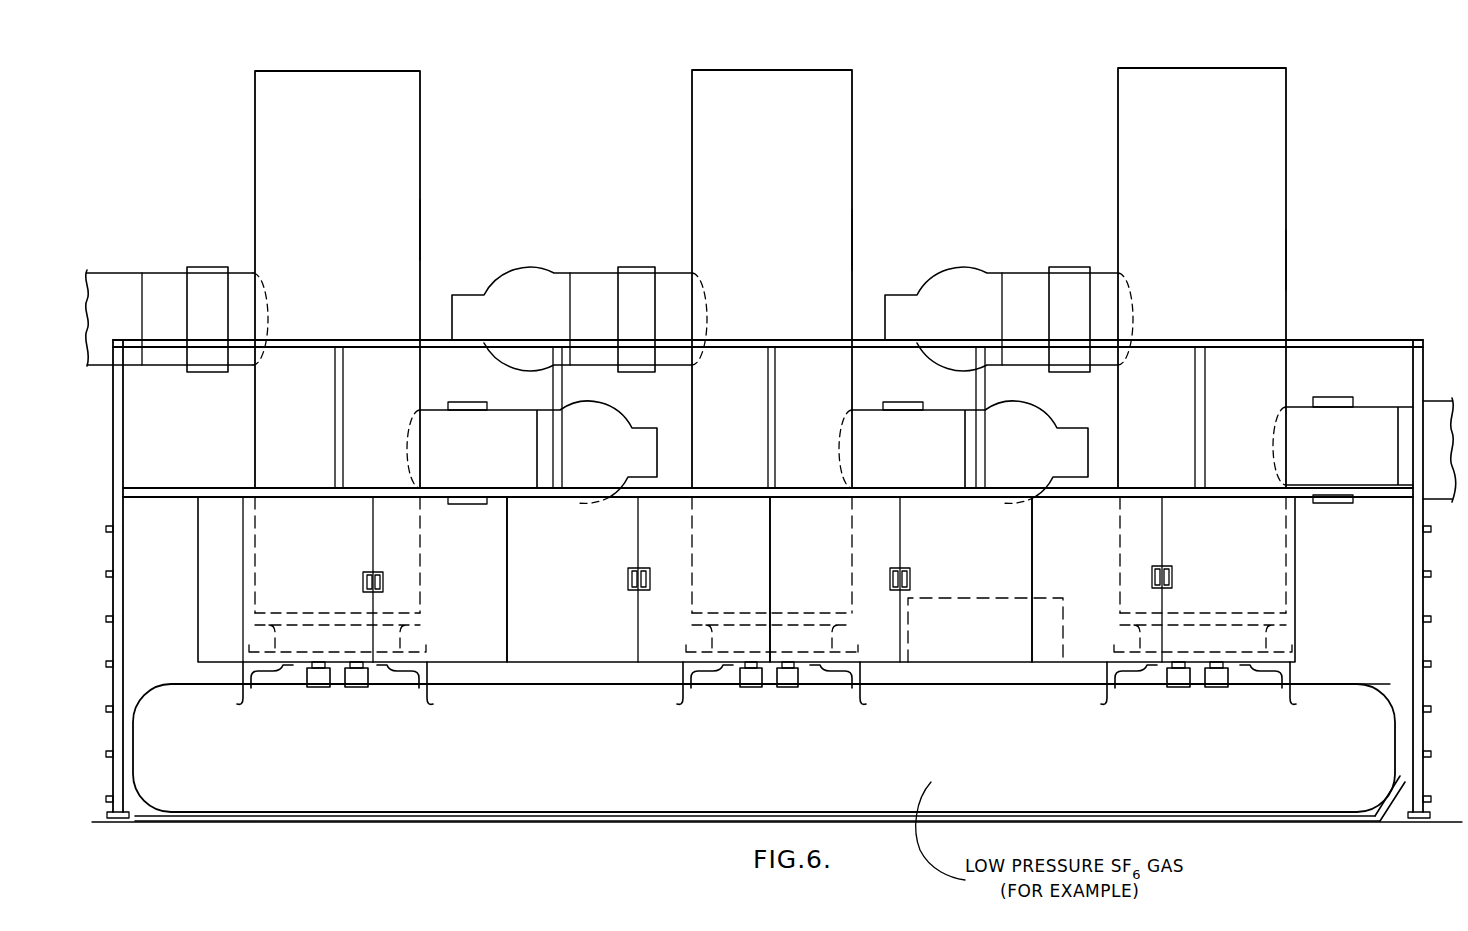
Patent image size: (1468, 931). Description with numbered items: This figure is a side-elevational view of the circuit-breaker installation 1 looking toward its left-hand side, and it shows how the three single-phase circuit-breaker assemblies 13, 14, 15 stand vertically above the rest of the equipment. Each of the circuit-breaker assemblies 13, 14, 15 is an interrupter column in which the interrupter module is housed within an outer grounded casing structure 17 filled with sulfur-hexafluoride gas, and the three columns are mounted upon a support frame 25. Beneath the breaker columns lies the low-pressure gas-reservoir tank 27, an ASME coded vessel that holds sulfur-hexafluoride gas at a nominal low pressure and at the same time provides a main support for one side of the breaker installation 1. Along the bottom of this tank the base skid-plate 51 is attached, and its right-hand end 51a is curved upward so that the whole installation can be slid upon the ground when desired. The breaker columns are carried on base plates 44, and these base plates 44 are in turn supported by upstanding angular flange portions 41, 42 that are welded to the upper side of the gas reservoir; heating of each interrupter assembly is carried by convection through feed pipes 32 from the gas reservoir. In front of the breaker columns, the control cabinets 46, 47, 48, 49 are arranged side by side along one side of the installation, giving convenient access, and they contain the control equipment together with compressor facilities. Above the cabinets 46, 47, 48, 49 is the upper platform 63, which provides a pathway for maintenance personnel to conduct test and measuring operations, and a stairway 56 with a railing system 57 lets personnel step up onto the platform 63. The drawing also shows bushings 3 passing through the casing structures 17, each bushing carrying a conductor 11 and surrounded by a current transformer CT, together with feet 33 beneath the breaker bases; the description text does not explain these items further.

The circuit-breaker installation 1 is at (920, 186).
The bushing 3 is at (160, 273).
The conductor 11 is at (142, 273).
The current transformer CT is at (208, 267).
The circuit-breaker assembly 13 is at (328, 207).
The circuit-breaker assembly 14 is at (765, 207).
The circuit-breaker assembly 15 is at (1190, 207).
The casing structure 17 is at (420, 234).
The support frame 25 is at (470, 822).
The low-pressure gas-reservoir tank 27 is at (588, 686).
The feed pipe 32 is at (362, 680).
The support foot 33 is at (312, 680).
The upstanding angular flange portion 41 is at (427, 670).
The upstanding angular flange portion 42 is at (243, 670).
The base plate 44 is at (356, 650).
The control cabinet 46 is at (296, 557).
The control cabinet 47 is at (563, 557).
The control cabinet 48 is at (948, 557).
The control cabinet 49 is at (1193, 557).
The base skid-plate 51 is at (1172, 818).
The right-hand end of skid-plate 51a is at (1390, 810).
The stairway 56 is at (108, 620).
The railing system 57 is at (1340, 340).
The upper platform 63 is at (725, 486).